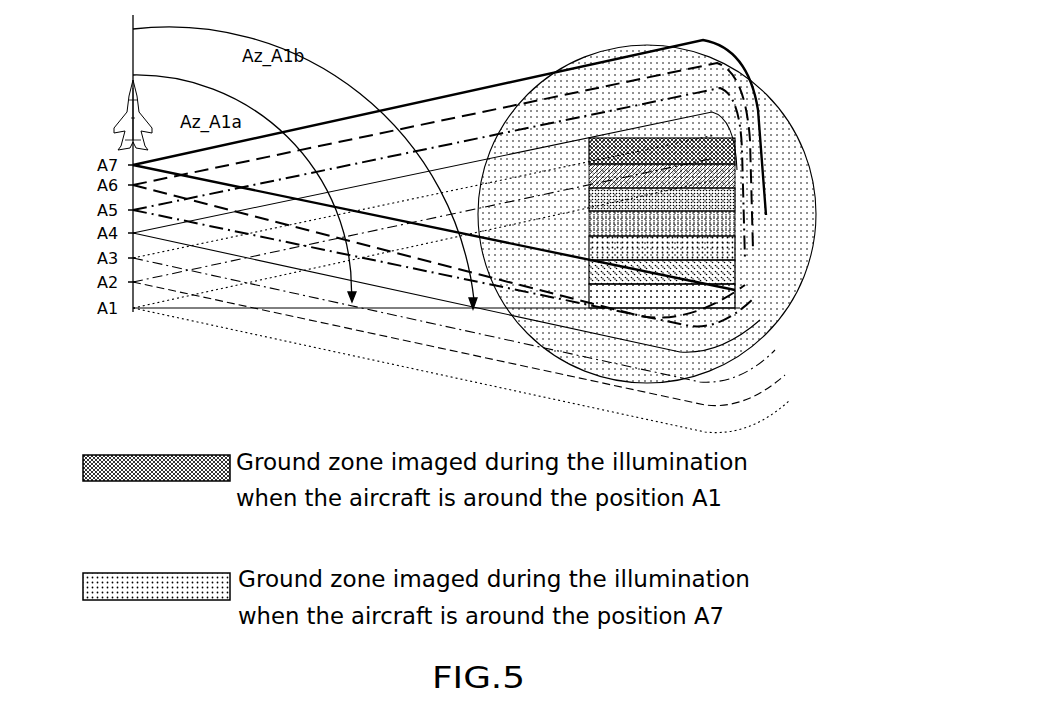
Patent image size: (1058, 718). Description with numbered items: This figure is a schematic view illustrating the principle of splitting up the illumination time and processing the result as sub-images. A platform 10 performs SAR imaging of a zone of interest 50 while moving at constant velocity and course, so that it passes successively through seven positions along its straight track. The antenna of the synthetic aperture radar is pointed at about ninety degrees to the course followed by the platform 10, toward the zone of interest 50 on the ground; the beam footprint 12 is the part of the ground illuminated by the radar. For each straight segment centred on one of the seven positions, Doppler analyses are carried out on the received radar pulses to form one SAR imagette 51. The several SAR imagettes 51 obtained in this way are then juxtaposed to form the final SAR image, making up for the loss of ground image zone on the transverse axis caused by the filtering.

The platform 10 is at (115, 110).
The ground footprint of the radar beam 12 is at (717, 430).
The zone of interest 50 is at (773, 115).
The SAR imagette 51 is at (754, 294).